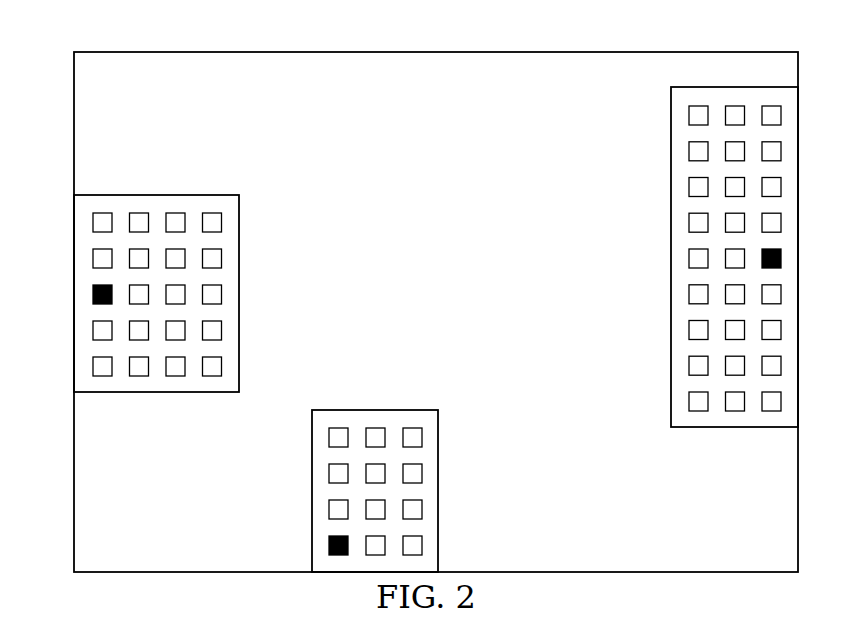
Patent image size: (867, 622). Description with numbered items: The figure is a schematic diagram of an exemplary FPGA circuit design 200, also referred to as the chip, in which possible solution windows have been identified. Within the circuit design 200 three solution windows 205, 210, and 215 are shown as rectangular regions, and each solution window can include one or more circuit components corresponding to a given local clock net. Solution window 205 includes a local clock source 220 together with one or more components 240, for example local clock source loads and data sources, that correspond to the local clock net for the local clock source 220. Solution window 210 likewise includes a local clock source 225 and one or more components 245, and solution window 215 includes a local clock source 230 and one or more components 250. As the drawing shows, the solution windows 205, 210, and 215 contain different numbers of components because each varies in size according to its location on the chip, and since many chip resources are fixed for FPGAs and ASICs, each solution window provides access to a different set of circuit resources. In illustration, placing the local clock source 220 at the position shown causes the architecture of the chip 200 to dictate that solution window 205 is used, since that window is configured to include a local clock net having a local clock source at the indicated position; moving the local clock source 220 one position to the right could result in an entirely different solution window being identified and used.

The FPGA circuit design 200 is at (71, 32).
The solution window 205 is at (239, 232).
The solution window 210 is at (438, 463).
The solution window 215 is at (671, 267).
The local clock source 220 is at (94, 288).
The local clock source 225 is at (330, 536).
The local clock source 230 is at (780, 252).
The components 240 is at (220, 361).
The components 245 is at (329, 508).
The components 250 is at (689, 216).